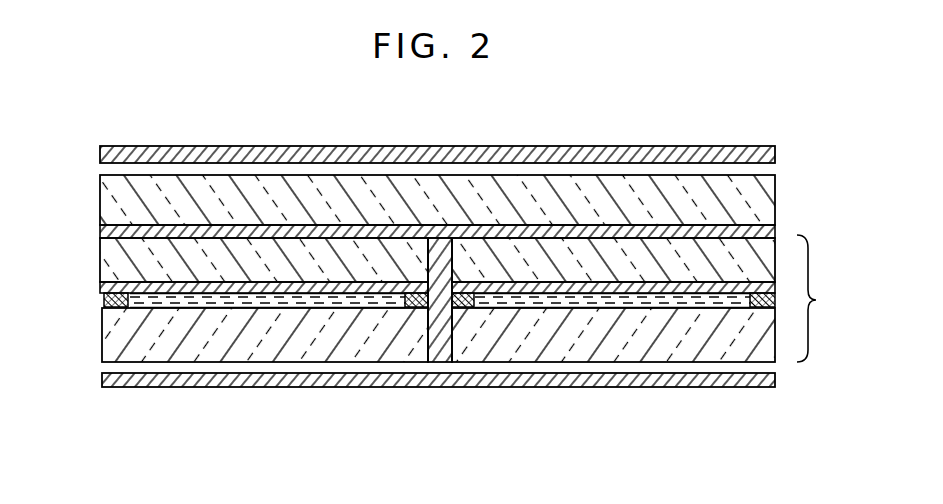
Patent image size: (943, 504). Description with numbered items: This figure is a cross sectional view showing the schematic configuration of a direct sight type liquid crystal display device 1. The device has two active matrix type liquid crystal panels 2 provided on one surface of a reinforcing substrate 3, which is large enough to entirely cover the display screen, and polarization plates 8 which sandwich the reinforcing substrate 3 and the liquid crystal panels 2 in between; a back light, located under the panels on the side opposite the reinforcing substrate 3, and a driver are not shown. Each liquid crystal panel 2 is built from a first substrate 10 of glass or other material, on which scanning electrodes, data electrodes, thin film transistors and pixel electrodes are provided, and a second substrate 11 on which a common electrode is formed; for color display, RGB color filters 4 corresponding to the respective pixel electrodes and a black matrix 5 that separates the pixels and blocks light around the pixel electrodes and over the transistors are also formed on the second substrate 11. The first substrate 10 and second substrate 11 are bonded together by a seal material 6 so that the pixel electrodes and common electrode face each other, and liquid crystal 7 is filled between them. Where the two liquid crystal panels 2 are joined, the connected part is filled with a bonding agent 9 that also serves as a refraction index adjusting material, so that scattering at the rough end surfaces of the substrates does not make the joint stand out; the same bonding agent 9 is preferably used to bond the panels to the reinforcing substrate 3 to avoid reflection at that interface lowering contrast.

The liquid crystal display device 1 is at (724, 125).
The liquid crystal panel 2 is at (62, 371).
The reinforcing substrate 3 is at (104, 197).
The color filter 4 is at (197, 298).
The black matrix 5 is at (144, 297).
The seal material 6 is at (104, 300).
The liquid crystal 7 is at (338, 298).
The polarization plate 8 is at (493, 146).
The bonding agent 9 is at (446, 356).
The first substrate 10 is at (108, 326).
The second substrate 11 is at (104, 265).